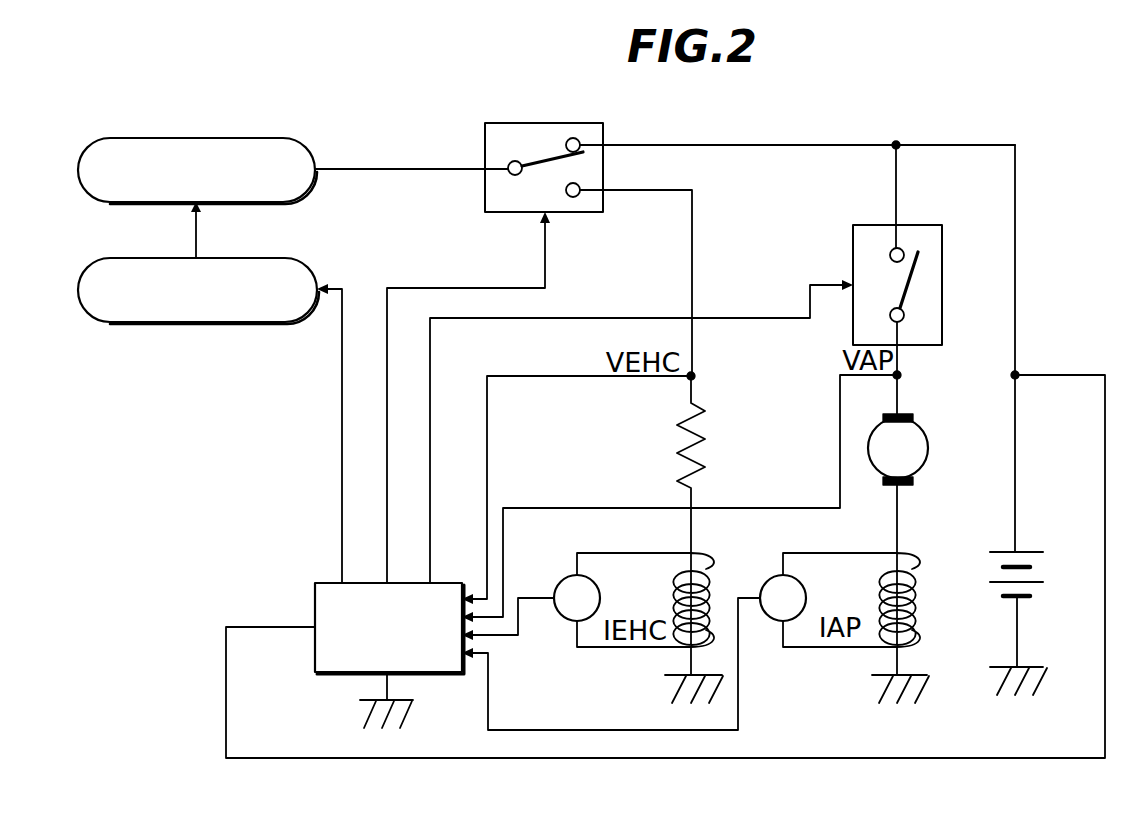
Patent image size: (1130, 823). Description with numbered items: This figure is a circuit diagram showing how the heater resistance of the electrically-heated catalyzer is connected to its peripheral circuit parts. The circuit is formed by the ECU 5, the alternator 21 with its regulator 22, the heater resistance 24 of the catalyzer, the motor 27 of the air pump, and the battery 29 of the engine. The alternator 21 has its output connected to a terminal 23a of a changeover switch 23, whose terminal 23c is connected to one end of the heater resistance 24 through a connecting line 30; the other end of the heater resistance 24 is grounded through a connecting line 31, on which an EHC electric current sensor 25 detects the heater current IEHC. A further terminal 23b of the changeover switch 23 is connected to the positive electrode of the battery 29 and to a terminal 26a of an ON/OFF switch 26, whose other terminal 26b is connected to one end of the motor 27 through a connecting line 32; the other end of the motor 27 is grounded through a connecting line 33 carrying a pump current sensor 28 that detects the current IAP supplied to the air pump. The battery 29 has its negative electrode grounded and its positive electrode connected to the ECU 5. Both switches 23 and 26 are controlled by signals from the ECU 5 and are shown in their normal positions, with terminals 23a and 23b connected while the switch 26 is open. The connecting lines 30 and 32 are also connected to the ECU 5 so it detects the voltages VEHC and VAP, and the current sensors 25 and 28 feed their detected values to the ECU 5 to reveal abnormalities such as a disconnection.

The ECU 5 is at (325, 582).
The alternator 21 is at (307, 145).
The regulator 22 is at (307, 265).
The changeover switch 23 is at (552, 174).
The terminal 23a is at (507, 160).
The terminal 23b is at (578, 137).
The terminal 23c is at (580, 199).
The heater resistance 24 is at (700, 430).
The EHC electric current sensor 25 is at (595, 578).
The ON/OFF switch 26 is at (899, 279).
The terminal 26a is at (890, 253).
The terminal 26b is at (891, 321).
The motor 27 is at (923, 432).
The pump current sensor 28 is at (798, 580).
The battery 29 is at (1047, 570).
The connecting line 30 is at (692, 257).
The connecting line 31 is at (706, 610).
The connecting line 32 is at (900, 357).
The connecting line 33 is at (900, 513).